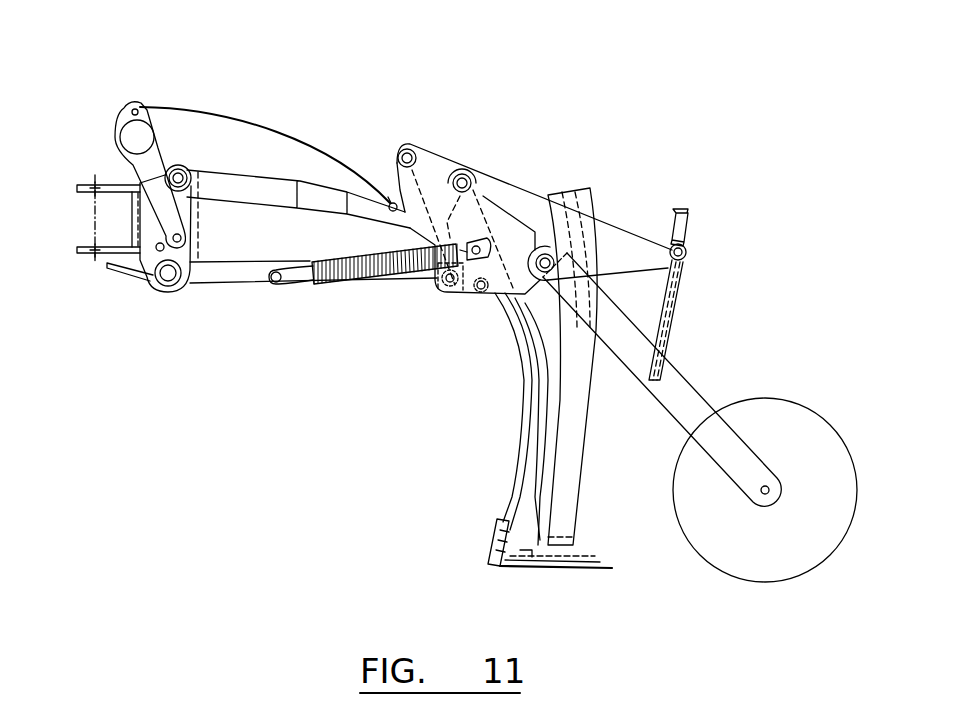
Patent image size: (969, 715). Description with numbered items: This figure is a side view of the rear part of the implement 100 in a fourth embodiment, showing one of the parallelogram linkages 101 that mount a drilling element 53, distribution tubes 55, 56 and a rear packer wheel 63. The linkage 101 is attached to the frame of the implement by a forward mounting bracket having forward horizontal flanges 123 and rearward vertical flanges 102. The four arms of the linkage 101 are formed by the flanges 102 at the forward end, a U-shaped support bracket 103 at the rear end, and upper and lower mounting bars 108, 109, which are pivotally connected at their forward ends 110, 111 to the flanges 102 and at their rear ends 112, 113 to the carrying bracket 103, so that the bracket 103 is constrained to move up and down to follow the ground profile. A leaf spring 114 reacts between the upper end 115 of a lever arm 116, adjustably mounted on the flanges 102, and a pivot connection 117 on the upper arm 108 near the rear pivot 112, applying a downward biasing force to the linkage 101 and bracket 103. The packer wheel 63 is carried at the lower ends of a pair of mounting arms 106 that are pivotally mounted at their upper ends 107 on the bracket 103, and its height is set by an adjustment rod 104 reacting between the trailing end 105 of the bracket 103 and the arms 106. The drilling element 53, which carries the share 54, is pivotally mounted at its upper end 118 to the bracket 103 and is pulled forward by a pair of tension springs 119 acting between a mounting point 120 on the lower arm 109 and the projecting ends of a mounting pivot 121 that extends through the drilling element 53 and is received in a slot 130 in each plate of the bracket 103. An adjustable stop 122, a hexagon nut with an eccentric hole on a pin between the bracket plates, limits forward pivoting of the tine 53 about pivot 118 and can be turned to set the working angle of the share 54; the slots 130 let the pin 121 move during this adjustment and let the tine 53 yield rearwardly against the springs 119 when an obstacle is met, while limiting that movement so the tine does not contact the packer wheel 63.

The rear part of the implement 100 is at (708, 246).
The parallelogram linkage 101 is at (283, 236).
The rearward vertical flanges 102 is at (187, 223).
The U-shaped support bracket 103 is at (528, 228).
The adjustment rod 104 is at (672, 300).
The trailing end 105 is at (641, 236).
The mounting arms 106 is at (683, 393).
The upper ends of mounting arms 107 is at (597, 192).
The upper mounting bar 108 is at (257, 180).
The lower mounting bar 109 is at (344, 290).
The forward pivotal connection of upper arm 110 is at (186, 166).
The forward pivotal connection of lower arm 111 is at (160, 290).
The rear pivotal connection of upper arm 112 is at (468, 165).
The rear pivotal connection of lower arm 113 is at (447, 285).
The leaf spring 114 is at (302, 136).
The upper end of lever arm 115 is at (131, 104).
The lever arm 116 is at (110, 128).
The pivot connection 117 is at (389, 198).
The upper pivot point 118 is at (408, 150).
The tension springs 119 is at (388, 276).
The mounting point 120 is at (273, 283).
The mounting pivot 121 is at (489, 240).
The adjustable stop 122 is at (480, 292).
The forward horizontal flanges 123 is at (107, 254).
The slot 130 is at (487, 242).
The drilling element 53 is at (526, 450).
The share 54 is at (548, 568).
The distribution tube 55 is at (551, 400).
The distribution tube 56 is at (570, 440).
The rear packer wheel 63 is at (800, 437).